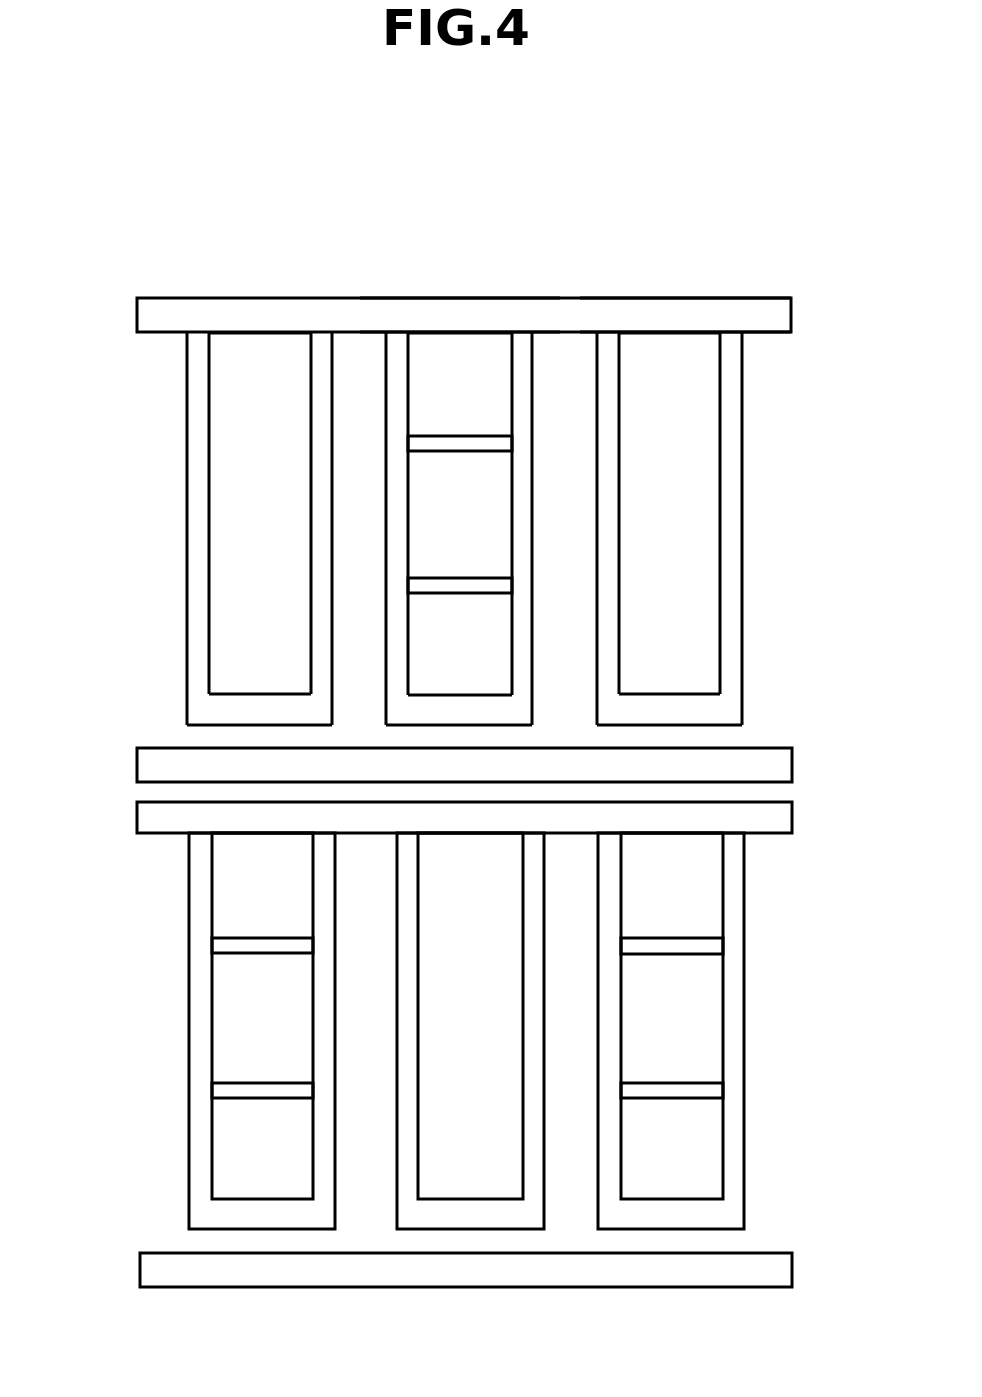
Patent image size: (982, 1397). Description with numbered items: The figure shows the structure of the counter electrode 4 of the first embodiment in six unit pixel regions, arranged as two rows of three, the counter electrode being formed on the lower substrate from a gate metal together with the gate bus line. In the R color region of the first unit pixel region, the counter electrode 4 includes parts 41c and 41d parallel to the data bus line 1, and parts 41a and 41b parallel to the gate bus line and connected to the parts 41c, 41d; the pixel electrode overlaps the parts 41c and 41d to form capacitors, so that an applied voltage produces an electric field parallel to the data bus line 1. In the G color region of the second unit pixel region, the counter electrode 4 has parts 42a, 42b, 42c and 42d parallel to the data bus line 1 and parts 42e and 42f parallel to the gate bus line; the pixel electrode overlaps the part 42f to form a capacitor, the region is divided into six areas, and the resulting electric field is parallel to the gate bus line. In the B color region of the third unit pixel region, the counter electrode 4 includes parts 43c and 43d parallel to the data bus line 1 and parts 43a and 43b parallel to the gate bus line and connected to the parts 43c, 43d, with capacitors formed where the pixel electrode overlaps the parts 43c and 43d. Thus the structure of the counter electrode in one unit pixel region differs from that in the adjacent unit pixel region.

The counter electrode 4 is at (763, 266).
The data bus line 1 is at (776, 757).
The counter electrode part 41a is at (197, 418).
The counter electrode part 41b is at (322, 500).
The counter electrode part 41c is at (253, 314).
The counter electrode part 41d is at (218, 708).
The counter electrode part 42a is at (455, 314).
The counter electrode part 42b is at (462, 443).
The counter electrode part 42c is at (473, 552).
The counter electrode part 42d is at (430, 702).
The counter electrode part 42e is at (400, 361).
The counter electrode part 42f is at (523, 473).
The counter electrode part 43a is at (658, 410).
The counter electrode part 43b is at (735, 455).
The counter electrode part 43c is at (668, 314).
The counter electrode part 43d is at (658, 700).